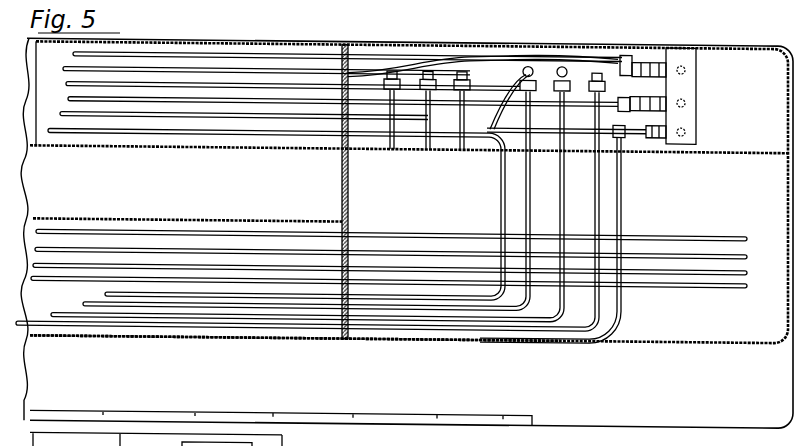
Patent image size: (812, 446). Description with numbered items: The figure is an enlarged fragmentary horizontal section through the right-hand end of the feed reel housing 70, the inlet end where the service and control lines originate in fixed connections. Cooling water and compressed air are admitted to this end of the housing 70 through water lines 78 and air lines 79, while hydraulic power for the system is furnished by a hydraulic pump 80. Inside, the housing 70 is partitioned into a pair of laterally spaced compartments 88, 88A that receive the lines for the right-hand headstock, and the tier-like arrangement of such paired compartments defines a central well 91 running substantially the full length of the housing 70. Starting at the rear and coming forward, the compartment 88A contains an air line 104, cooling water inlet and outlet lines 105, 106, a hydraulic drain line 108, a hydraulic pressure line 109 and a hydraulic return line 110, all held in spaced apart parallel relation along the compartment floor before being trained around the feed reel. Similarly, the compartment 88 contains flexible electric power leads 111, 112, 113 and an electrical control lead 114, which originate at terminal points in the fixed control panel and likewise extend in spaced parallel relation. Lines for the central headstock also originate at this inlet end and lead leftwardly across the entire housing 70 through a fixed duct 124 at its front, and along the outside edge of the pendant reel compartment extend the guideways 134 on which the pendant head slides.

The feed reel housing 70 is at (690, 423).
The water lines 78 is at (688, 97).
The air lines 79 is at (688, 125).
The compartment 88 is at (231, 221).
The compartment 88A is at (291, 45).
The central well 91 is at (340, 203).
The air line 104 is at (74, 53).
The cooling water inlet line 105 is at (64, 68).
The cooling water outlet line 106 is at (67, 83).
The hydraulic drain line 108 is at (69, 98).
The hydraulic pressure line 109 is at (61, 113).
The hydraulic return line 110 is at (49, 131).
The electric power lead 111 is at (77, 229).
The electric power lead 112 is at (110, 247).
The electric power lead 113 is at (44, 282).
The electrical control lead 114 is at (66, 284).
The fixed duct 124 is at (38, 326).
The guideways 134 is at (534, 424).
The hydraulic pump 80 is at (156, 439).